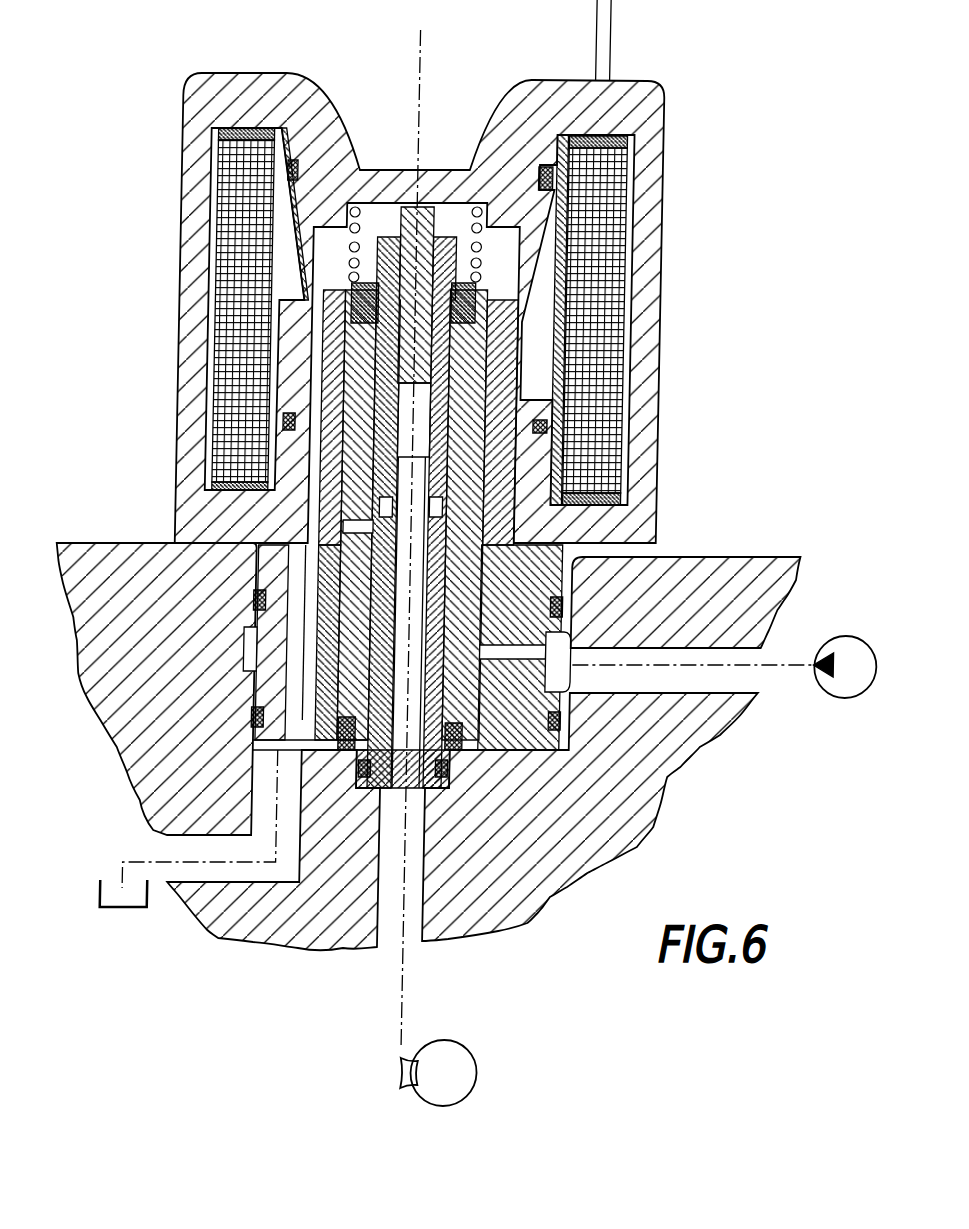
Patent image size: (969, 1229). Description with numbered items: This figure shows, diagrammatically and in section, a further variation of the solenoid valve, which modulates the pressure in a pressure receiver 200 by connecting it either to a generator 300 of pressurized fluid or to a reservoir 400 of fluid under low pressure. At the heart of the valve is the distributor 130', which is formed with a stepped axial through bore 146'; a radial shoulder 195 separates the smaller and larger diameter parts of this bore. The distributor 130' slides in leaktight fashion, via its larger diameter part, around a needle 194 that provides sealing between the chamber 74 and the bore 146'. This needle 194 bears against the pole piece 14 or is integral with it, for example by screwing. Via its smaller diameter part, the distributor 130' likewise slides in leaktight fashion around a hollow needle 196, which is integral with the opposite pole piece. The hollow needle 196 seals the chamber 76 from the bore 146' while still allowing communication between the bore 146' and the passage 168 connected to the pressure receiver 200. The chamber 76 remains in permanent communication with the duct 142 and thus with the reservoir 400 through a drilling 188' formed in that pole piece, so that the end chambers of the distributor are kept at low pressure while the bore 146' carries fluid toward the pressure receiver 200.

The pole piece 14 is at (213, 114).
The chamber 74 is at (378, 217).
The needle 194 is at (413, 213).
The distributor 130' is at (453, 402).
The stepped axial through bore 146' is at (258, 585).
The radial shoulder 195 is at (438, 458).
The duct 142 is at (310, 682).
The drilling 188' is at (313, 714).
The reservoir 400 is at (137, 910).
The passage 168 is at (406, 908).
The hollow needle 196 is at (454, 793).
The chamber 76 is at (460, 752).
The generator of pressurized fluid 300 is at (855, 678).
The pressure receiver 200 is at (419, 1073).